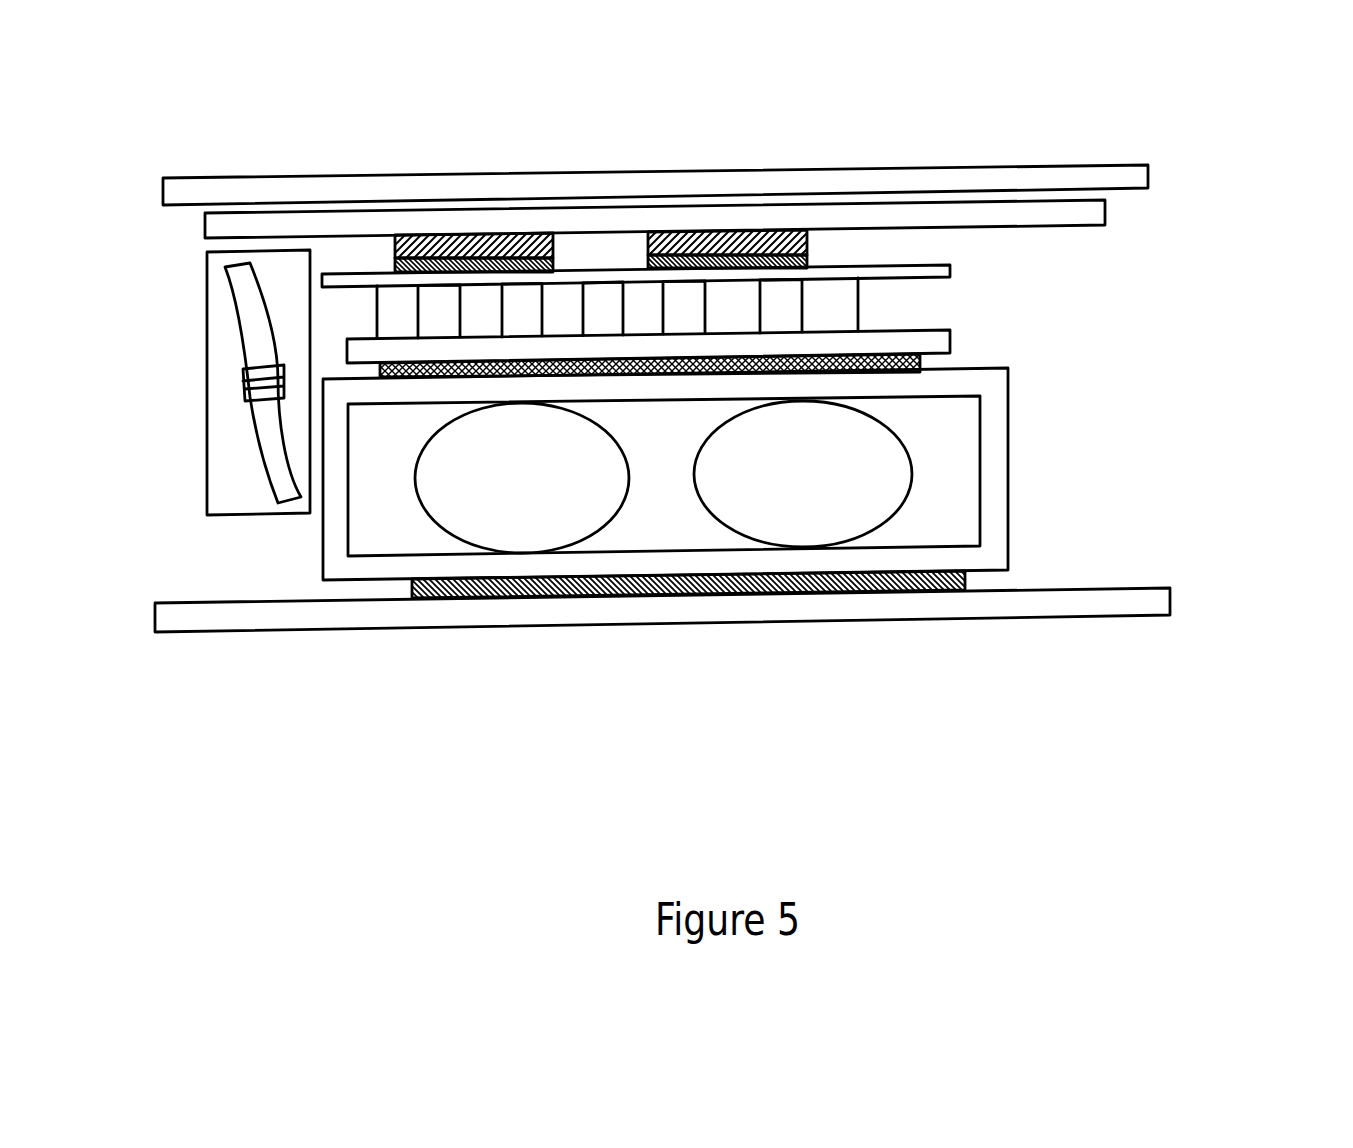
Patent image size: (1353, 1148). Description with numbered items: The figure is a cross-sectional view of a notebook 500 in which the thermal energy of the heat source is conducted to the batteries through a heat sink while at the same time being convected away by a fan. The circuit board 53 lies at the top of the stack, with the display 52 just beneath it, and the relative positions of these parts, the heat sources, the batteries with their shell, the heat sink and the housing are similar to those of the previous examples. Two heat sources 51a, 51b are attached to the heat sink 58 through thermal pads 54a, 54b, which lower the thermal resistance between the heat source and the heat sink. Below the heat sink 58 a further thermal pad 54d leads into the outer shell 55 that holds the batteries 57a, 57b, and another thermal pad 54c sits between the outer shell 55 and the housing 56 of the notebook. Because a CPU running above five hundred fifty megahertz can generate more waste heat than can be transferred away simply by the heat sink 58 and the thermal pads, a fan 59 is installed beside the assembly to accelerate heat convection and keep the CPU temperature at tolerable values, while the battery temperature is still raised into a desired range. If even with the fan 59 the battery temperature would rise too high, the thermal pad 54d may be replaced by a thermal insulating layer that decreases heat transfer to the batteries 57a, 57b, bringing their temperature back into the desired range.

The notebook 500 is at (1207, 700).
The circuit board 53 is at (1005, 217).
The display 52 is at (913, 180).
The heat source 51a is at (435, 233).
The thermal pad 54a is at (543, 236).
The heat source 51b is at (690, 233).
The thermal pad 54b is at (801, 240).
The heat sink 58 is at (842, 302).
The thermal pad 54d is at (923, 362).
The outer shell 55 is at (995, 505).
The battery 57b is at (512, 515).
The battery 57a is at (753, 512).
The thermal pad 54c is at (907, 580).
The housing 56 is at (1085, 600).
The fan 59 is at (250, 427).